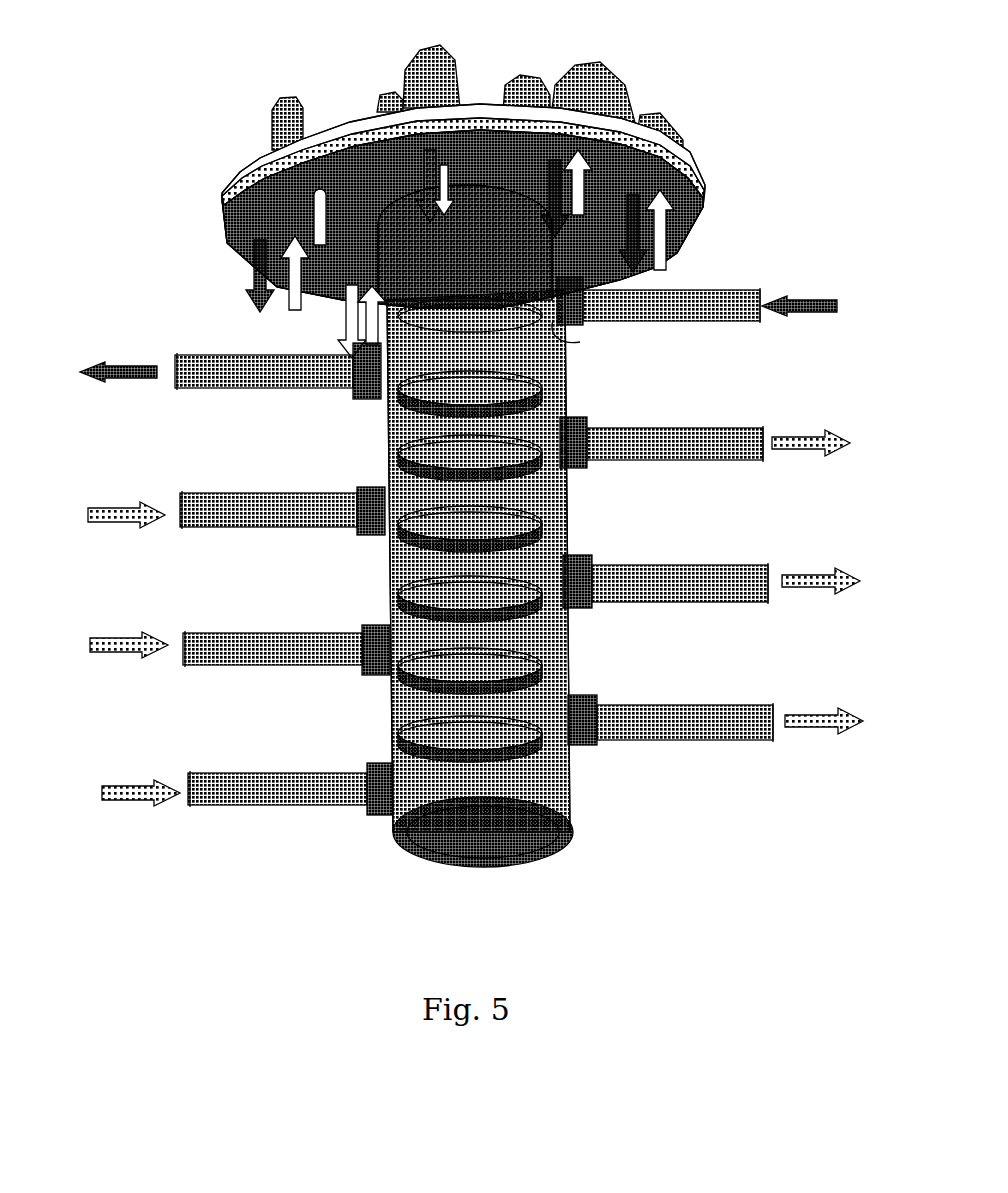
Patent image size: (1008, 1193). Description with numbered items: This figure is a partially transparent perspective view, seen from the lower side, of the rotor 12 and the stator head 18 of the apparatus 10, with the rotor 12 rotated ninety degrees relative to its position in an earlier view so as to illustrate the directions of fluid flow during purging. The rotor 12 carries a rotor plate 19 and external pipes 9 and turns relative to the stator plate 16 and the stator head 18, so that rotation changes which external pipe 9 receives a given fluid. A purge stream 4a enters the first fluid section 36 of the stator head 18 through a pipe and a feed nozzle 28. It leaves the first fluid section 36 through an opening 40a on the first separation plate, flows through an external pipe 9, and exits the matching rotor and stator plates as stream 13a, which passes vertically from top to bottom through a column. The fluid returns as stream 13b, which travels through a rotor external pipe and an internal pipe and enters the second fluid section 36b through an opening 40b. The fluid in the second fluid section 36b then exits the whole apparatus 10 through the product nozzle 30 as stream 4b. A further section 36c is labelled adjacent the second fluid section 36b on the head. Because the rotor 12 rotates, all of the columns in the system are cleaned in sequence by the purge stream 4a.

The apparatus 10 is at (738, 103).
The external pipe 9 is at (420, 80).
The rotor 12 is at (455, 206).
The stream 13a is at (420, 145).
The stream 13b is at (436, 178).
The stator plate 16 is at (230, 258).
The stator head 18 is at (397, 850).
The rotor plate 19 is at (697, 172).
The feed nozzle 28 is at (672, 282).
The product nozzle 30 is at (225, 388).
The first fluid section 36 is at (518, 561).
The second fluid section 36b is at (540, 372).
The inlet connection 36c is at (550, 327).
The opening 40a is at (473, 218).
The opening 40b is at (457, 328).
The purge stream 4a is at (823, 308).
The stream 4b is at (101, 373).